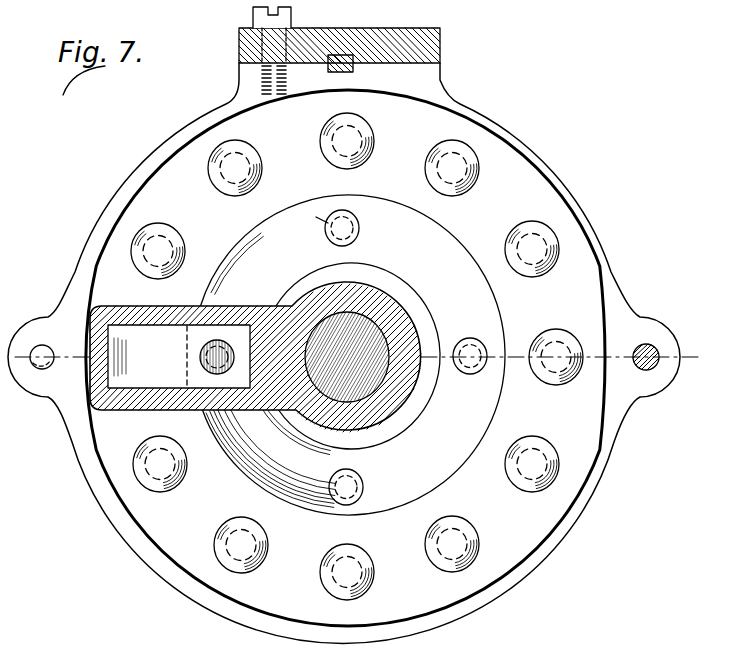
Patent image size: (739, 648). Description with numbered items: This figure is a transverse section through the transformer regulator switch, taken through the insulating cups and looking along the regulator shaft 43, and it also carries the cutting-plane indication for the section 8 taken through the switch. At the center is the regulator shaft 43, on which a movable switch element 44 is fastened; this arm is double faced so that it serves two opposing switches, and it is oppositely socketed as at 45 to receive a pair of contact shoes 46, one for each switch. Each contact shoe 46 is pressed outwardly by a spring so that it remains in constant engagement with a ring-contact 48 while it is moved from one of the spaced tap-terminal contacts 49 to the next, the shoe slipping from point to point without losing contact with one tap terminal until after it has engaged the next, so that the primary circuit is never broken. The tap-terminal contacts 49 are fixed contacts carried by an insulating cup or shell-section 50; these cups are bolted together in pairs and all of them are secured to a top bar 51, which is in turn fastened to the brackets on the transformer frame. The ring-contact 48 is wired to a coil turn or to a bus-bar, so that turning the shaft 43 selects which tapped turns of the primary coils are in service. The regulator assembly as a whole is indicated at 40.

The housing 40 is at (64, 266).
The regulator shaft 43 is at (393, 413).
The movable switch element 44 is at (120, 306).
The socket 45 is at (117, 412).
The contact shoe 46 is at (95, 372).
The ring-contact 48 is at (432, 328).
The tap-terminal contact 49 is at (159, 250).
The insulating cup 50 is at (601, 246).
The top bar 51 is at (442, 46).
The section line 8- 8 is at (702, 335).